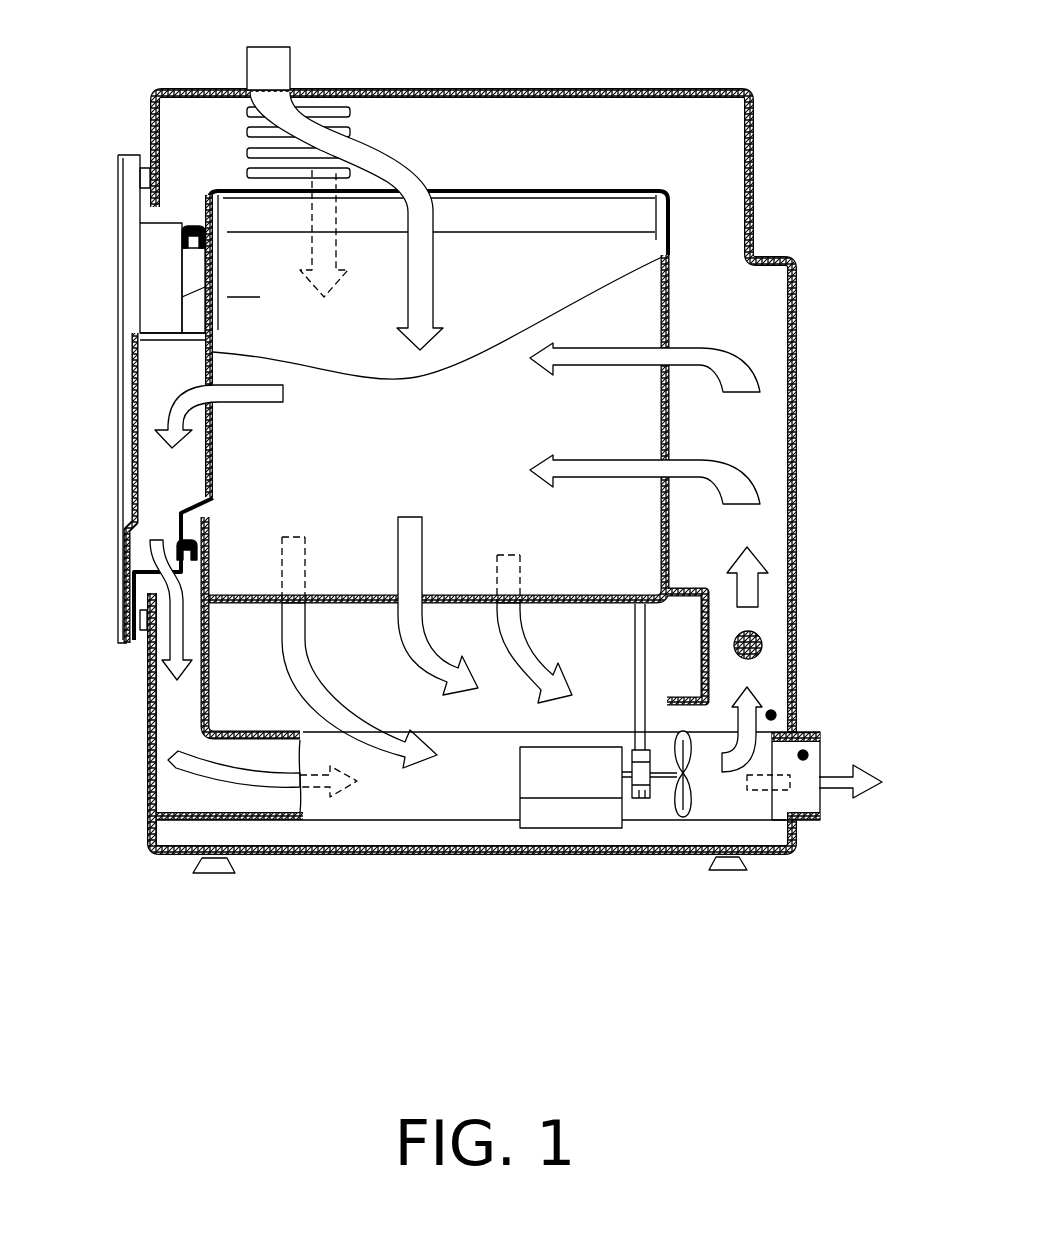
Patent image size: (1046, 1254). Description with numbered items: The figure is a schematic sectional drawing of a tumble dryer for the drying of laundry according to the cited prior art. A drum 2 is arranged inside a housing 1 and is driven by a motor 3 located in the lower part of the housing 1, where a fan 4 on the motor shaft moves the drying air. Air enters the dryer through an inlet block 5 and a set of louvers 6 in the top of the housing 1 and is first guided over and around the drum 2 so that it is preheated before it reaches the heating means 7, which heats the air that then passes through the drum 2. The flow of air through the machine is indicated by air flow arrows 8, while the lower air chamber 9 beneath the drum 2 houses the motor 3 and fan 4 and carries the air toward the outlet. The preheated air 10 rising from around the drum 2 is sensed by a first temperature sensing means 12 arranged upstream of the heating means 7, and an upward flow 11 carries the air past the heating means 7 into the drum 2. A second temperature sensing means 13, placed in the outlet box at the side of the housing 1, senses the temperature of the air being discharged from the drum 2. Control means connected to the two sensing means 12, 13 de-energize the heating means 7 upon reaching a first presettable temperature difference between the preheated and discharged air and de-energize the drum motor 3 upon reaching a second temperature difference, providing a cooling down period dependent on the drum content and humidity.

The housing 1 is at (683, 97).
The drum 2 is at (602, 202).
The motor 3 is at (568, 783).
The fan 4 is at (683, 800).
The filter block 5 is at (280, 68).
The louvers 6 is at (247, 153).
The heating means 7 is at (762, 640).
The discharged air 8 is at (180, 398).
The lower air chamber 9 is at (367, 803).
The preheated air 10 is at (723, 767).
The upward air flow 11 is at (752, 557).
The first temperature sensing means 12 is at (771, 715).
The second temperature sensing means 13 is at (803, 755).